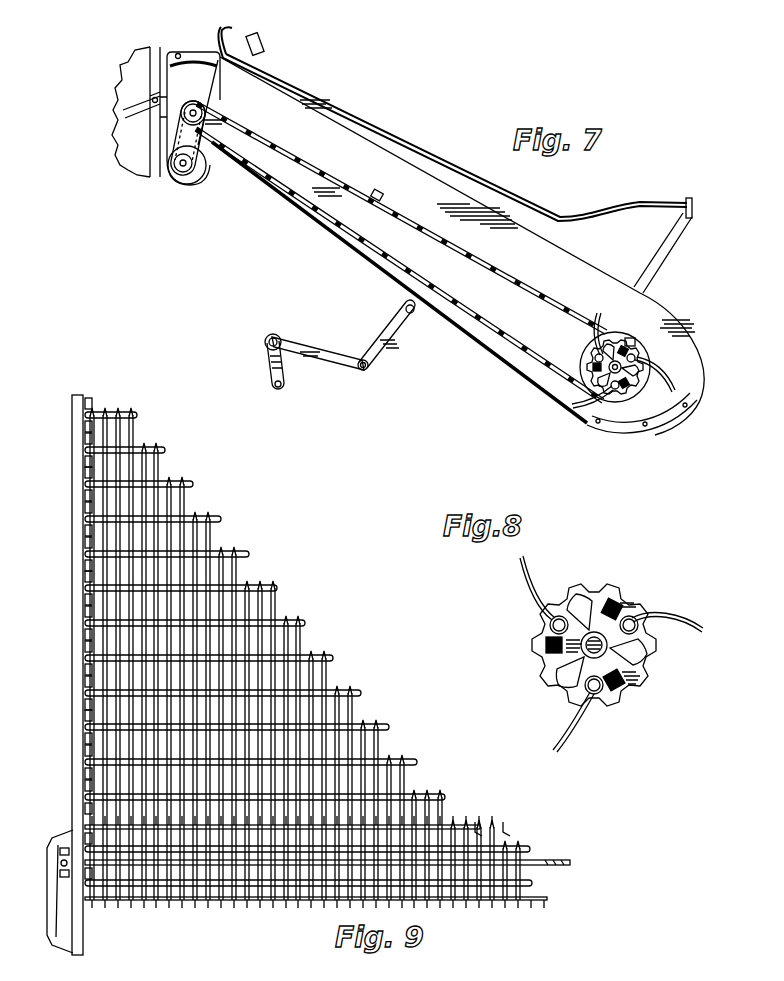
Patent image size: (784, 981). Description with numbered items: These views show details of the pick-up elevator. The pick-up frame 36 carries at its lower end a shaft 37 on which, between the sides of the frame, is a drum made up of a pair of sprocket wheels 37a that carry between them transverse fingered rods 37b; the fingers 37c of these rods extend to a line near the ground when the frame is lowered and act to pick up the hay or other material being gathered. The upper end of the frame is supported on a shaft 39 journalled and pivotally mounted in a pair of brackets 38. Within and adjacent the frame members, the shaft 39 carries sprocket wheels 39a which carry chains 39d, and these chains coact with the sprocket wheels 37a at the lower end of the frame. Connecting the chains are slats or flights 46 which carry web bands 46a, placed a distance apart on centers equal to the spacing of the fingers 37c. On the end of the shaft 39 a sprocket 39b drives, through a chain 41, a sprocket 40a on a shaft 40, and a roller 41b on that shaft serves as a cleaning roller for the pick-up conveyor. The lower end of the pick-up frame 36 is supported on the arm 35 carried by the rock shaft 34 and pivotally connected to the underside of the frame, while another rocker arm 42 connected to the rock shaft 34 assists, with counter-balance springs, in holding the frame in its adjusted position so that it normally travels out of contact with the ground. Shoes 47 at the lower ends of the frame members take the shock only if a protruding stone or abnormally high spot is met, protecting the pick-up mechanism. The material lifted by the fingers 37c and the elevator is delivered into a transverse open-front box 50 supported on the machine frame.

In FIG. 7, the rock shaft 34 is at (276, 336).
In FIG. 7, the arm 35 is at (346, 328).
In FIG. 7, the pick-up frame 36 is at (533, 380).
In FIG. 7, the shaft 37 is at (585, 368).
In FIG. 8, the shaft 37 is at (600, 647).
In FIG. 9, the shaft 37 is at (557, 870).
In FIG. 7, the sprocket wheels 37a is at (635, 352).
In FIG. 8, the sprocket wheels 37a is at (606, 592).
In FIG. 9, the sprocket wheels 37a is at (92, 884).
In FIG. 8, the transverse fingered rods 37b is at (622, 604).
In FIG. 7, the fingers 37c is at (597, 336).
In FIG. 8, the fingers 37c is at (521, 577).
In FIG. 9, the fingers 37c is at (504, 828).
In FIG. 7, the brackets 38 is at (170, 133).
In FIG. 7, the shaft 39 is at (201, 114).
In FIG. 7, the sprocket wheels 39a is at (190, 104).
In FIG. 7, the sprocket 39b is at (215, 130).
In FIG. 7, the chains 39d is at (443, 233).
In FIG. 9, the chains 39d is at (88, 775).
In FIG. 7, the shaft 40 is at (185, 177).
In FIG. 7, the sprocket 40a is at (174, 172).
In FIG. 7, the chain 41 is at (205, 165).
In FIG. 7, the roller 41b is at (195, 179).
In FIG. 7, the rocker arm 42 is at (268, 375).
In FIG. 7, the slats or flights 46 is at (377, 197).
In FIG. 9, the slats or flights 46 is at (123, 620).
In FIG. 9, the web bands 46a is at (320, 625).
In FIG. 7, the shoes 47 is at (632, 428).
In FIG. 9, the shoes 47 is at (60, 915).
In FIG. 7, the transverse box 50 is at (135, 90).